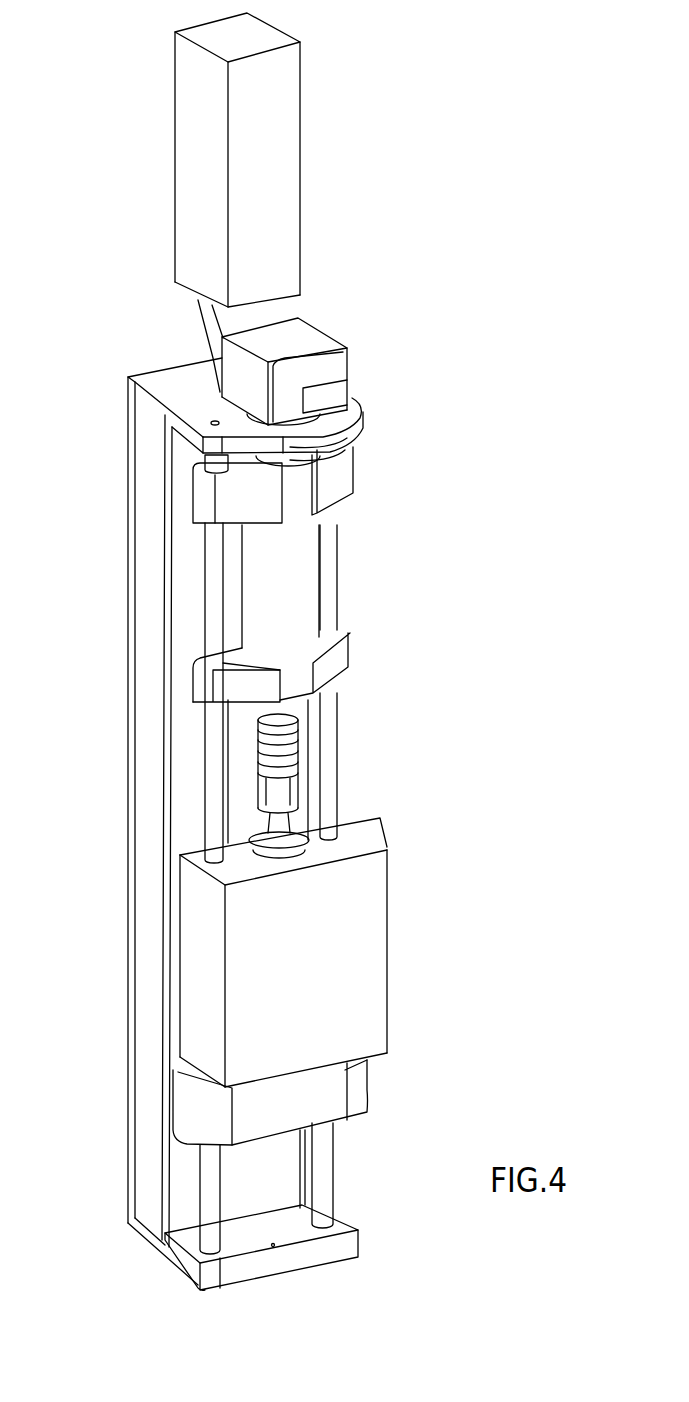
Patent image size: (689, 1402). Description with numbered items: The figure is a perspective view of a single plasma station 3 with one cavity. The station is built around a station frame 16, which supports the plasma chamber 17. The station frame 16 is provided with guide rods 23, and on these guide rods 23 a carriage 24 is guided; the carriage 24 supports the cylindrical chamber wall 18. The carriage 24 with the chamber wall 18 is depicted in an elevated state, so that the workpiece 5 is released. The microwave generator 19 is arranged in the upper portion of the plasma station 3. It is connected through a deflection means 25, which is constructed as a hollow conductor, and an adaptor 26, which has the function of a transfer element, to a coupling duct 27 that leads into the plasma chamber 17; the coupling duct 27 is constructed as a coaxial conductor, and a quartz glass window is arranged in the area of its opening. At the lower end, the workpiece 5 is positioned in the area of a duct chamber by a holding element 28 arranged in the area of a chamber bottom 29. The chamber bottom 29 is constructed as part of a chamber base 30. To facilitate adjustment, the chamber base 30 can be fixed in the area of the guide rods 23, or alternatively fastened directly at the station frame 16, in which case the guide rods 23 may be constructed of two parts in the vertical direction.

The plasma station 3 is at (376, 606).
The workpiece 5 is at (300, 790).
The station frame 16 is at (133, 862).
The plasma chamber 17 is at (378, 670).
The cylindrical chamber wall 18 is at (300, 585).
The microwave generator 19 is at (288, 227).
The guide rods 23 is at (213, 735).
The carriage 24 is at (360, 470).
The deflection means 25 is at (205, 322).
The adaptor 26 is at (330, 368).
The coupling duct 27 is at (353, 445).
The holding element 28 is at (360, 862).
The chamber bottom 29 is at (358, 842).
The chamber base 30 is at (363, 1023).